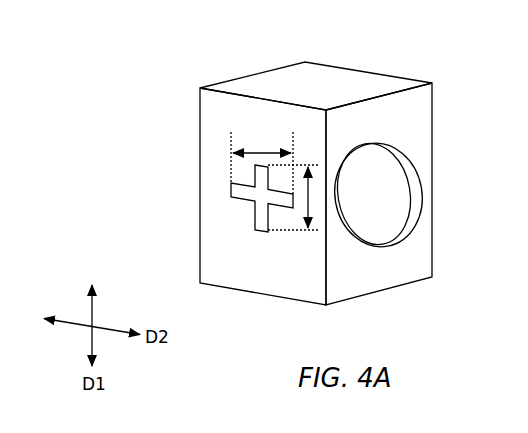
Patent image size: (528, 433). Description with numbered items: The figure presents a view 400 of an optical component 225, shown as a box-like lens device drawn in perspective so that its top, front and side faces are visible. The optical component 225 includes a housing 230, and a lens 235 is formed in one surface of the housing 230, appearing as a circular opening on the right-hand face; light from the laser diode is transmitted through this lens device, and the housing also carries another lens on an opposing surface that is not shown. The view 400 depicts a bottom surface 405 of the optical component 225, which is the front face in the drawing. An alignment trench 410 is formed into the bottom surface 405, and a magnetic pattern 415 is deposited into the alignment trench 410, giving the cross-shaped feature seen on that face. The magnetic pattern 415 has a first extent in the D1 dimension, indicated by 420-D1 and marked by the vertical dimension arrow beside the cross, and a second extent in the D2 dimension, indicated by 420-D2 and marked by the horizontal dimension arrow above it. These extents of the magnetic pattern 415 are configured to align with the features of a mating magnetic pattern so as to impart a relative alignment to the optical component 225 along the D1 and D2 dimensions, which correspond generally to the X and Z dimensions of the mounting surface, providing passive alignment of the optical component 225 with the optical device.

The view 400 is at (414, 52).
The optical component 225 is at (282, 81).
The housing 230 is at (316, 86).
The bottom surface 405 is at (268, 275).
The alignment trench 410 is at (260, 214).
The magnetic pattern 415 is at (243, 192).
The second extent in the D2 dimension 420-D2 is at (263, 151).
The first extent in the D1 dimension 420-D1 is at (313, 200).
The lens 235 is at (385, 205).